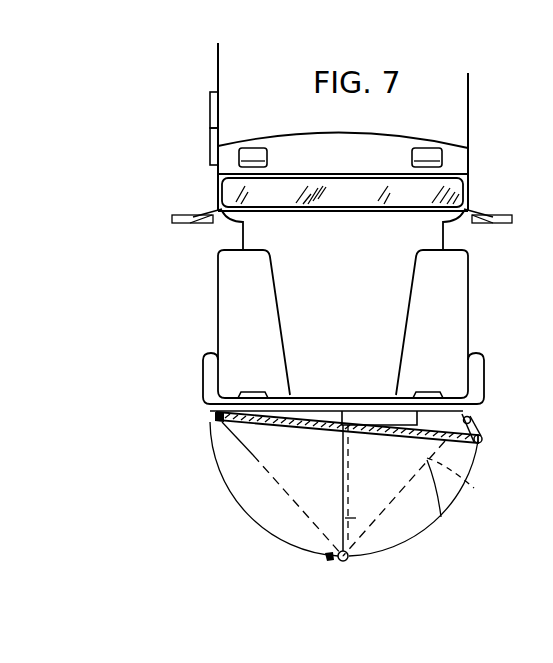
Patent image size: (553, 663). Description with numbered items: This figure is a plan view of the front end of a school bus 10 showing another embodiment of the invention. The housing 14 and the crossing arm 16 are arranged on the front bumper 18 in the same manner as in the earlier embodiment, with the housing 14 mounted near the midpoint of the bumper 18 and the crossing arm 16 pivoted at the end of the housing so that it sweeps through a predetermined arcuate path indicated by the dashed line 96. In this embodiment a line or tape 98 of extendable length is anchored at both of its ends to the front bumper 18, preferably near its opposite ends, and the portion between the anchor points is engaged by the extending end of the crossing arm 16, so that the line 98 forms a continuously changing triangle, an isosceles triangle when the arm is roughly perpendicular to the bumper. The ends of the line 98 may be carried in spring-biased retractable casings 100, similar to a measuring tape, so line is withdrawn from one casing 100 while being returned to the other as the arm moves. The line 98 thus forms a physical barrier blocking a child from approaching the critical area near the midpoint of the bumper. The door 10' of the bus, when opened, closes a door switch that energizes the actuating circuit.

The school bus 10 is at (347, 220).
The school bus door 10' is at (189, 132).
The housing 14 is at (376, 418).
The crossing arm 16 is at (482, 433).
The front bumper 18 is at (484, 368).
The dashed line indicating arcuate path 96 is at (443, 516).
The line or tape 98 is at (278, 420).
The spring-biased retractable casing 100 is at (216, 416).